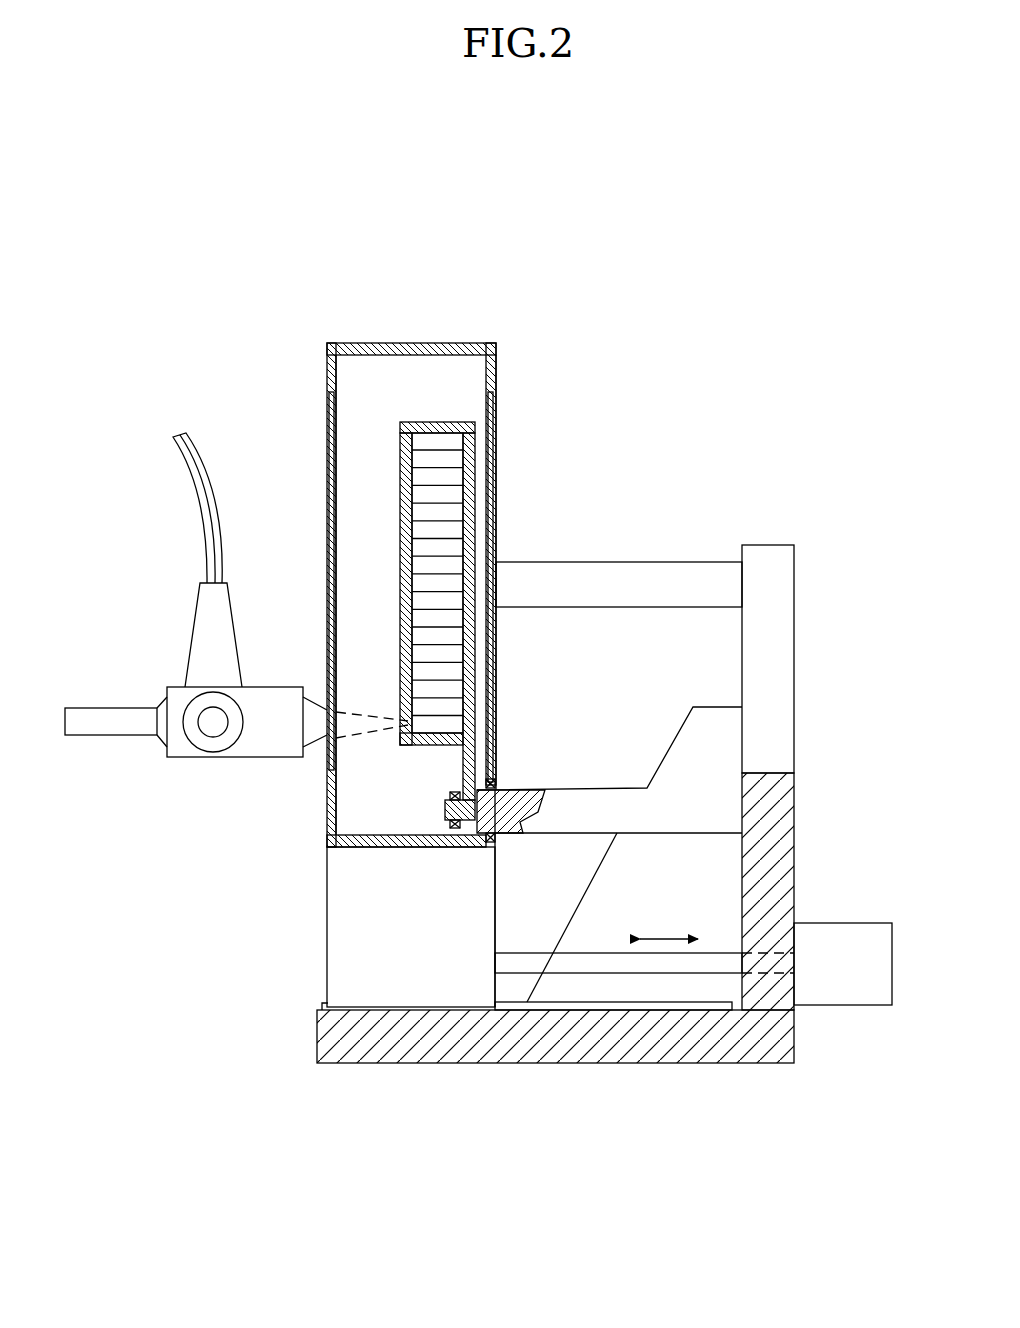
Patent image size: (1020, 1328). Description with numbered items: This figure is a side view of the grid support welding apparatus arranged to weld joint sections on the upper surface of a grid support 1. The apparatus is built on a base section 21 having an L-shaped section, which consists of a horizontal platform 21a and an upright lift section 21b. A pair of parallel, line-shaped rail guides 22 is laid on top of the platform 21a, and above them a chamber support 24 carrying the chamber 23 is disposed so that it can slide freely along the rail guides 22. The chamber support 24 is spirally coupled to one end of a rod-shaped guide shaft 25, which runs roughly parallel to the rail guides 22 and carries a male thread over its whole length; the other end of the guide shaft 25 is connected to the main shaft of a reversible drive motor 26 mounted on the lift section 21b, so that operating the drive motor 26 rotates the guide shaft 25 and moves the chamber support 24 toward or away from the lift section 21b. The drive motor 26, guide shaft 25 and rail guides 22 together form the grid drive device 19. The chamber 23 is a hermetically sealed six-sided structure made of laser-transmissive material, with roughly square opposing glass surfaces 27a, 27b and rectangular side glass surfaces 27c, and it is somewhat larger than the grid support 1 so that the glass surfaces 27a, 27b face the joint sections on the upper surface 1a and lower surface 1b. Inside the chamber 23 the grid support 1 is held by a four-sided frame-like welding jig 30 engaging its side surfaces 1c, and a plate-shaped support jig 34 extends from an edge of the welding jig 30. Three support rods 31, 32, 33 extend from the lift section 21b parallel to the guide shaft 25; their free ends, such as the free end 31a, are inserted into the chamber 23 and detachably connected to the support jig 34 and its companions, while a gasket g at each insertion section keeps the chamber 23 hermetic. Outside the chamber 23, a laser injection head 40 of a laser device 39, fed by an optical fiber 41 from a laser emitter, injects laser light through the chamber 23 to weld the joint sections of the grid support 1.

The grid support 1 is at (462, 422).
The upper surface of grid support 1a is at (410, 493).
The lower surface of grid support 1b is at (463, 458).
The side surfaces of grid support 1c is at (417, 750).
The grid drive device 19 is at (822, 1027).
The base section 21 is at (814, 821).
The platform 21a is at (632, 1062).
The lift section 21b is at (794, 630).
The rail guides 22 is at (662, 1005).
The chamber 23 is at (497, 343).
The chamber support 24 is at (358, 934).
The guide shaft 25 is at (557, 973).
The drive motor 26 is at (868, 923).
The glass surface 27a is at (330, 395).
The glass surface 27b is at (495, 398).
The side glass surfaces 27c is at (378, 343).
The welding jig 30 is at (400, 553).
The support rod 31 is at (597, 788).
The free end of support rod 31a is at (448, 807).
The support rod 32 is at (673, 562).
The support rod 33 is at (619, 584).
The support jig 34 is at (490, 733).
The laser device 39 is at (131, 564).
The laser injection head 40 is at (175, 687).
The optical fiber 41 is at (210, 515).
The gasket g is at (493, 785).